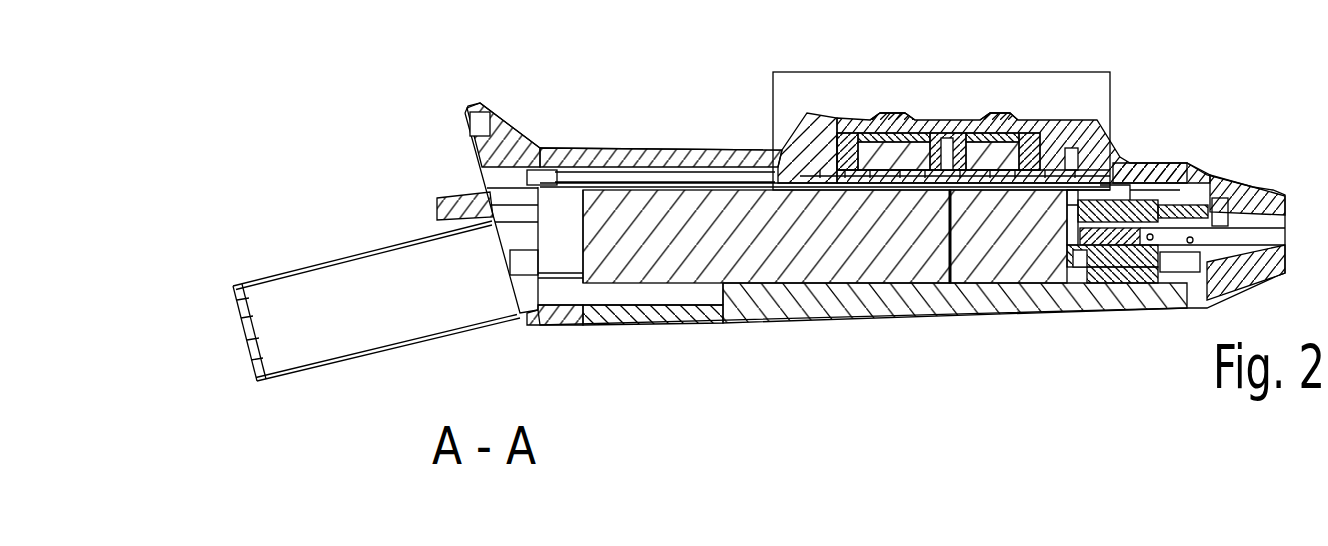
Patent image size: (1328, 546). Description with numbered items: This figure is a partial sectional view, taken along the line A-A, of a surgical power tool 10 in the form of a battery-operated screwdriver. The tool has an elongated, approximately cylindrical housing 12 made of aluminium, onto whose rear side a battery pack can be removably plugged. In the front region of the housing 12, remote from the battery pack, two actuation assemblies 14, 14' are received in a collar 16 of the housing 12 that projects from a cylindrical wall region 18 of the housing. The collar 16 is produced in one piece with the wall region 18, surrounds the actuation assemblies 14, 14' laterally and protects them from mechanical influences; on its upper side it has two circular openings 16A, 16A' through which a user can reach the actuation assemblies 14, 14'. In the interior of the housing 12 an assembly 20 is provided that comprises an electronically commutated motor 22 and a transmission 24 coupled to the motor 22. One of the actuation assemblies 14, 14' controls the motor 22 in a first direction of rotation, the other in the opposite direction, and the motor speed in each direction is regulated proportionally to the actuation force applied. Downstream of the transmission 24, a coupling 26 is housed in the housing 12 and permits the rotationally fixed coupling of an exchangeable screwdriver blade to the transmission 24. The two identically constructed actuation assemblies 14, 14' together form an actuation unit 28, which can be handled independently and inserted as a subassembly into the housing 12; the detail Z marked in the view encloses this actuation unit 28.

The surgical power tool 10 is at (428, 152).
The housing 12 is at (812, 344).
The actuation assembly 14 is at (1038, 69).
The actuation assembly 14' is at (924, 69).
The collar 16 is at (808, 122).
The circular opening 16A is at (996, 80).
The circular opening 16A' is at (885, 80).
The cylindrical wall region 18 is at (700, 148).
The assembly 20 is at (780, 290).
The electronically commutated motor 22 is at (727, 240).
The transmission 24 is at (1002, 240).
The coupling 26 is at (1145, 248).
The actuation unit 28 is at (1078, 88).